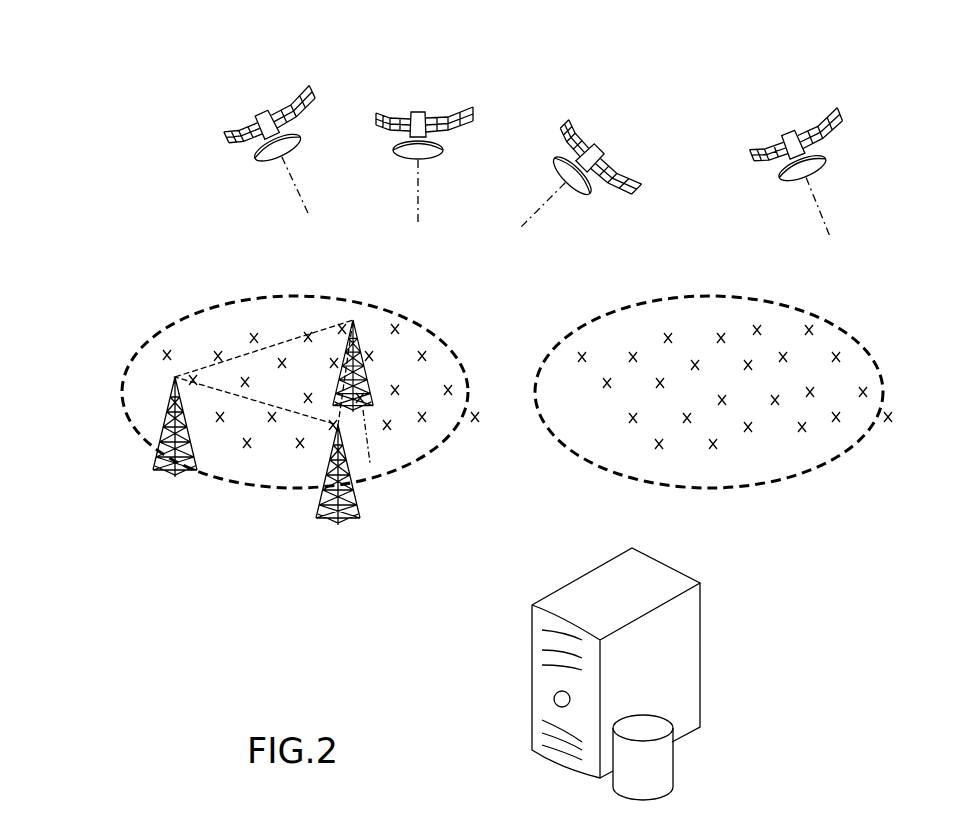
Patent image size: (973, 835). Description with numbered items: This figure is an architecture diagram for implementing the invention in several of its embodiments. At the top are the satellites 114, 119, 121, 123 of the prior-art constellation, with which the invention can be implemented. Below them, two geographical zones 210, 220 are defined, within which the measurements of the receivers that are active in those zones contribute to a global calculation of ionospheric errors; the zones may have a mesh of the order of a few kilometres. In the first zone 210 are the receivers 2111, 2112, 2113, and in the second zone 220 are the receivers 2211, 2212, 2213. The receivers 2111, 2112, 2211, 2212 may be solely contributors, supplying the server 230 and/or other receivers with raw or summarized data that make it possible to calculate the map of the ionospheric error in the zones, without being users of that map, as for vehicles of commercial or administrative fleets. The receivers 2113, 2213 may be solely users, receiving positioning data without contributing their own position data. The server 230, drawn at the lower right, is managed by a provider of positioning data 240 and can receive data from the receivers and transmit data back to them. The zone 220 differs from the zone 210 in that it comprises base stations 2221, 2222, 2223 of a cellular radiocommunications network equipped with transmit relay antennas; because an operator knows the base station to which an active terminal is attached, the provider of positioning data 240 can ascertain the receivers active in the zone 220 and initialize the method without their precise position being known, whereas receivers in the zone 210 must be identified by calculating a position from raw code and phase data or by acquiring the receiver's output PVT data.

The satellite 114 is at (603, 153).
The satellite 119 is at (418, 110).
The satellite 121 is at (830, 158).
The satellite 123 is at (260, 116).
The geographical zone 210 is at (845, 333).
The receiver 2111 is at (806, 430).
The receiver 2112 is at (716, 446).
The receiver 2113 is at (635, 423).
The geographical zone 220 is at (348, 300).
The receiver 2211 is at (398, 391).
The receiver 2212 is at (389, 428).
The receiver 2213 is at (221, 420).
The base station 2221 is at (163, 465).
The base station 2222 is at (355, 522).
The base station 2223 is at (357, 342).
The server 230 is at (700, 650).
The provider of positioning data 240 is at (673, 763).